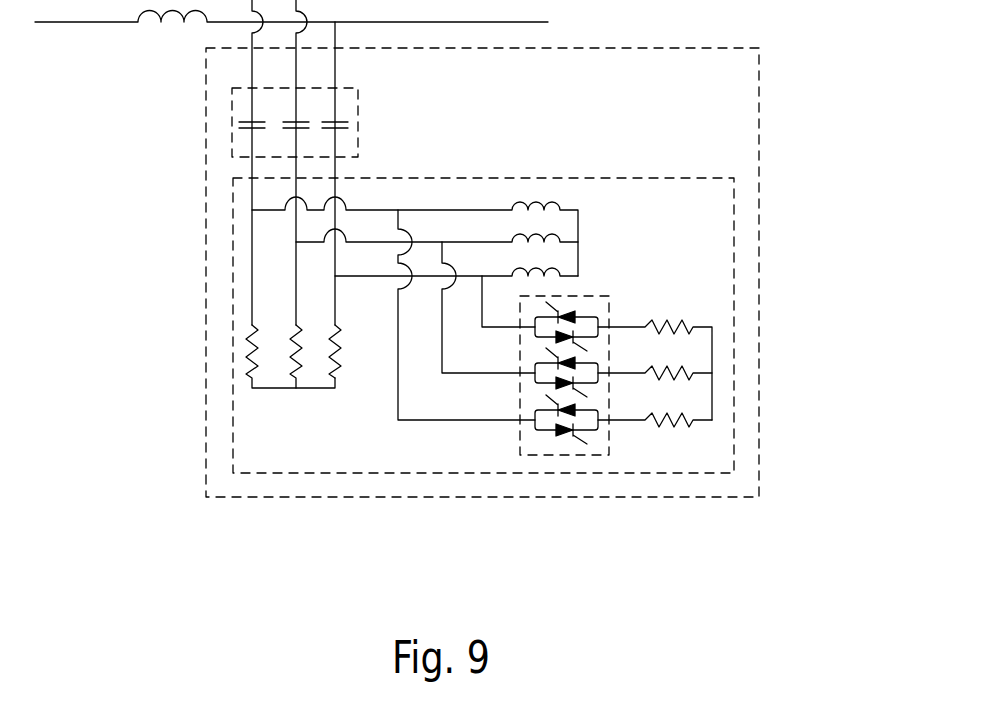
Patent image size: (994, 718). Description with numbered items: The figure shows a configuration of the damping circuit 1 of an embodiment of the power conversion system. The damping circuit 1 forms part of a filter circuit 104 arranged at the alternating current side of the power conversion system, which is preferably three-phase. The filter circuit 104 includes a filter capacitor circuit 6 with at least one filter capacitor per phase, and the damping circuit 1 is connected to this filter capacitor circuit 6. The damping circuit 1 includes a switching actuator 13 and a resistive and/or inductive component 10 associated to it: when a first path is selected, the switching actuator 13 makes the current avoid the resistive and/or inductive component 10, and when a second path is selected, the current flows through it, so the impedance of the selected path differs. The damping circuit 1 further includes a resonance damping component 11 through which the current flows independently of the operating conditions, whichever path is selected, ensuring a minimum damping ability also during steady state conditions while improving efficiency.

The filter circuit 104 is at (759, 73).
The filter capacitor circuit 6 is at (358, 110).
The damping circuit 1 is at (232, 217).
The resonance damping component 11 is at (247, 352).
The switching actuator 13 is at (562, 455).
The resistive and/or inductive component 10 is at (670, 320).